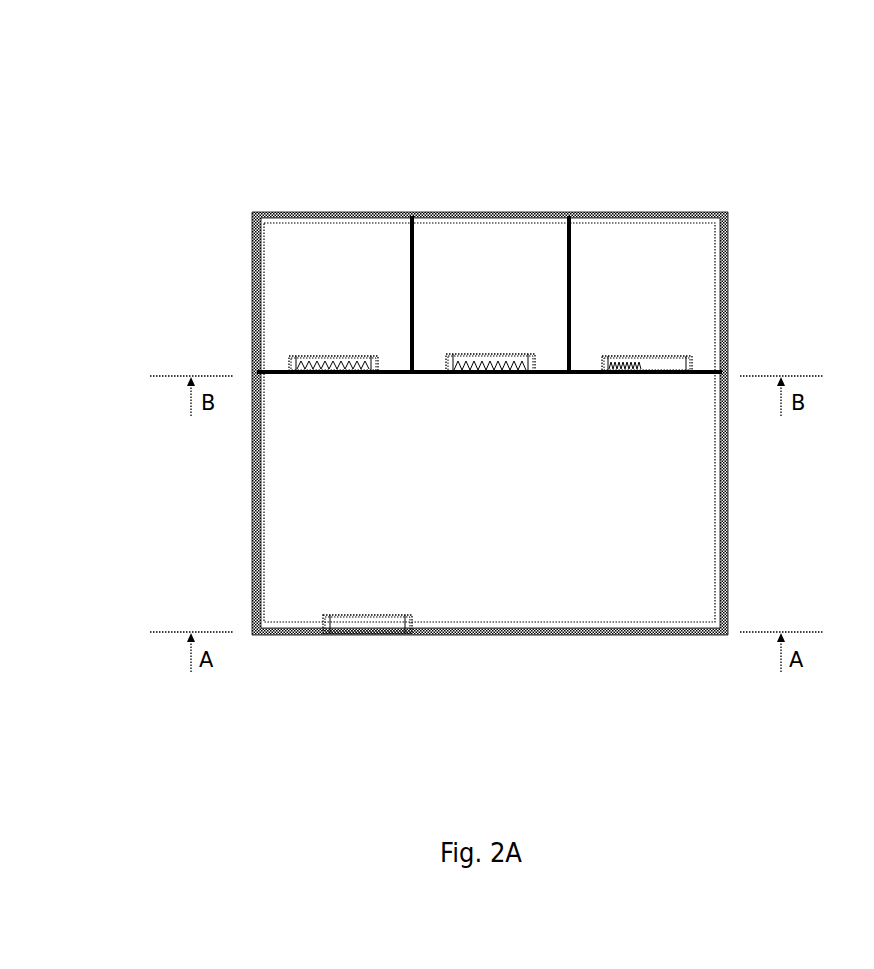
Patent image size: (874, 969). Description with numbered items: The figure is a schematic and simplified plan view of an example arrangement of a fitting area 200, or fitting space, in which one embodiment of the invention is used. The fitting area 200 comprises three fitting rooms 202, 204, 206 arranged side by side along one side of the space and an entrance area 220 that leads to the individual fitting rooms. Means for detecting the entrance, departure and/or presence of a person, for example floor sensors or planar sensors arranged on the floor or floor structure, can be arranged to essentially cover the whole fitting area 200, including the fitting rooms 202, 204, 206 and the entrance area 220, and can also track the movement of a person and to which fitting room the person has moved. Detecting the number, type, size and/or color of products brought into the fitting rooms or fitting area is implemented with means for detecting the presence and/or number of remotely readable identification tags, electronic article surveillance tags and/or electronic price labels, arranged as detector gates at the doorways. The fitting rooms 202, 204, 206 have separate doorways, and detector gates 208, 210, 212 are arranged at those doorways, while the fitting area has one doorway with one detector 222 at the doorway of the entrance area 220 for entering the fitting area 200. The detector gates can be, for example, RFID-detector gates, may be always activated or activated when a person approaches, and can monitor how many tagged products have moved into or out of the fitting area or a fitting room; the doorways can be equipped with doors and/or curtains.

The fitting area 200 is at (128, 121).
The fitting room 202 is at (318, 254).
The fitting room 204 is at (485, 254).
The fitting room 206 is at (658, 254).
The detector gate 208 is at (335, 362).
The detector gate 210 is at (493, 363).
The detector gate 212 is at (660, 360).
The entrance area 220 is at (462, 550).
The detector 222 is at (371, 630).